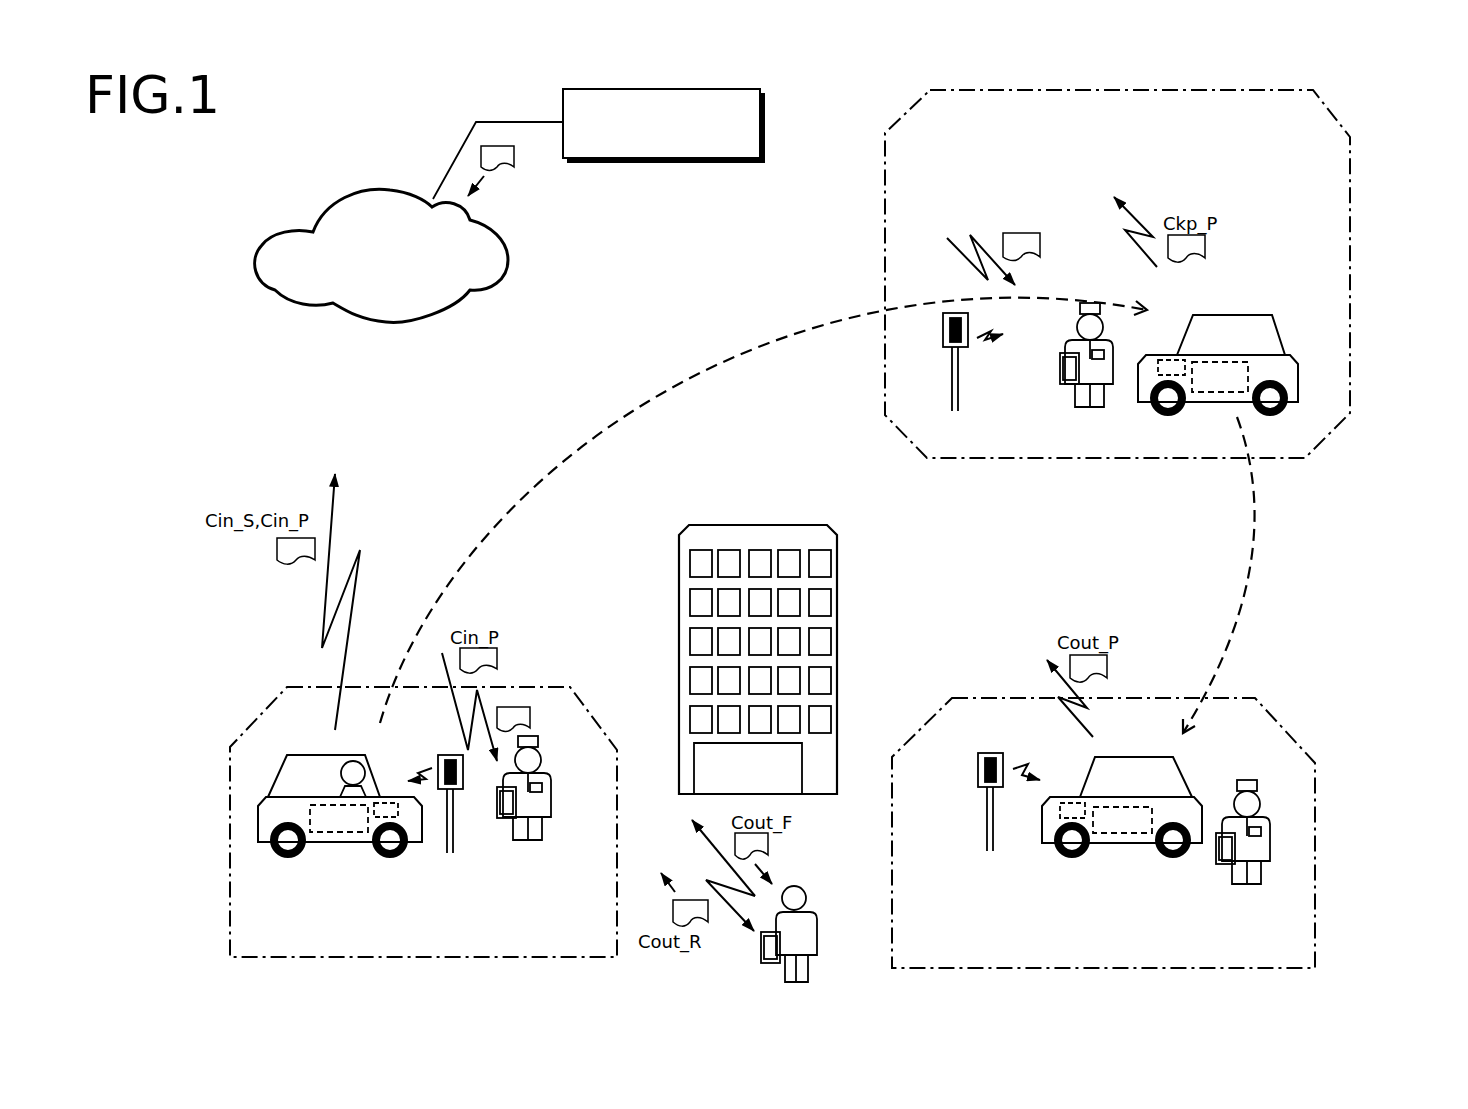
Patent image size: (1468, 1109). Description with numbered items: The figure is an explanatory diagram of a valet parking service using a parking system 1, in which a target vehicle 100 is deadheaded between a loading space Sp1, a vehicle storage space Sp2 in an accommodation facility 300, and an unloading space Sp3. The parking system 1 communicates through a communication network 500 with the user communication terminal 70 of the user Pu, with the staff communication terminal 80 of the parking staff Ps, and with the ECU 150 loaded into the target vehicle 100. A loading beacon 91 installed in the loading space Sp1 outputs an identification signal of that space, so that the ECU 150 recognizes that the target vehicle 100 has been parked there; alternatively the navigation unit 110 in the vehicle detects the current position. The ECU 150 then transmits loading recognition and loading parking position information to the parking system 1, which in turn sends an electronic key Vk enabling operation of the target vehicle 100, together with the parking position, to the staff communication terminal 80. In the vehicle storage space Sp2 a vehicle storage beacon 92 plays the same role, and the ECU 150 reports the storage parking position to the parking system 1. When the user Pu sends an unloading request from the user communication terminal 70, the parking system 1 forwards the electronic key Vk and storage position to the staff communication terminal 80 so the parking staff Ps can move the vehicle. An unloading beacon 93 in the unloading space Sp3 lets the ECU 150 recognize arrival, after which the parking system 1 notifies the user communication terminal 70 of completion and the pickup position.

The parking system 1 is at (760, 122).
The communication network 500 is at (346, 199).
The accommodation facility 300 is at (762, 525).
The target vehicle 100 is at (320, 755).
The ECU 150 is at (345, 834).
The navigation unit 110 is at (402, 808).
The staff communication terminal 80 is at (497, 804).
The user communication terminal 70 is at (761, 950).
The loading beacon 91 is at (450, 755).
The vehicle storage beacon 92 is at (943, 335).
The unloading beacon 93 is at (978, 773).
The loading space Sp1 is at (230, 778).
The vehicle storage space Sp2 is at (1350, 256).
The unloading space Sp3 is at (1315, 857).
The user Pu is at (363, 769).
The parking staff Ps is at (543, 762).
The electronic key Vk is at (754, 438).